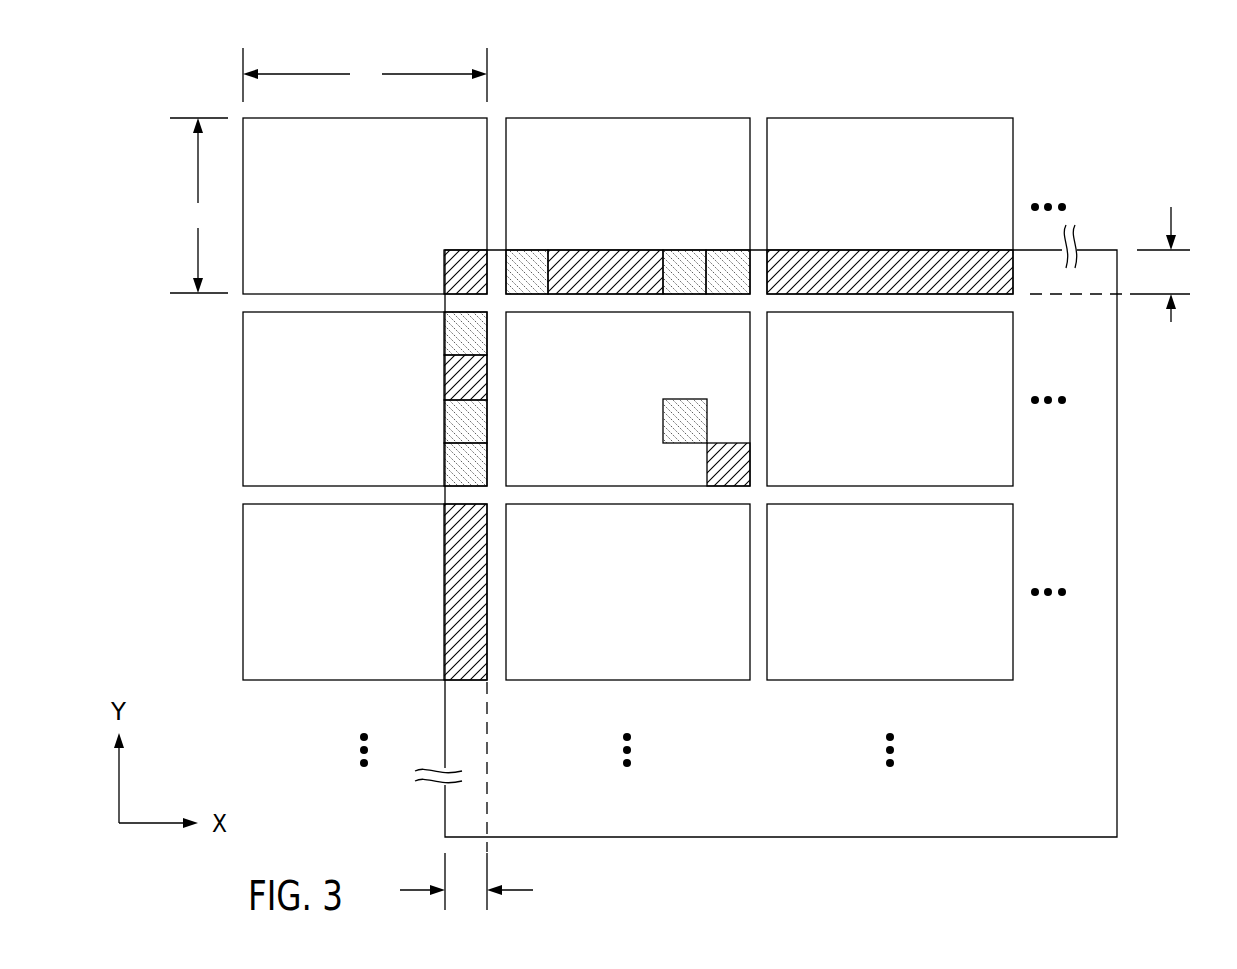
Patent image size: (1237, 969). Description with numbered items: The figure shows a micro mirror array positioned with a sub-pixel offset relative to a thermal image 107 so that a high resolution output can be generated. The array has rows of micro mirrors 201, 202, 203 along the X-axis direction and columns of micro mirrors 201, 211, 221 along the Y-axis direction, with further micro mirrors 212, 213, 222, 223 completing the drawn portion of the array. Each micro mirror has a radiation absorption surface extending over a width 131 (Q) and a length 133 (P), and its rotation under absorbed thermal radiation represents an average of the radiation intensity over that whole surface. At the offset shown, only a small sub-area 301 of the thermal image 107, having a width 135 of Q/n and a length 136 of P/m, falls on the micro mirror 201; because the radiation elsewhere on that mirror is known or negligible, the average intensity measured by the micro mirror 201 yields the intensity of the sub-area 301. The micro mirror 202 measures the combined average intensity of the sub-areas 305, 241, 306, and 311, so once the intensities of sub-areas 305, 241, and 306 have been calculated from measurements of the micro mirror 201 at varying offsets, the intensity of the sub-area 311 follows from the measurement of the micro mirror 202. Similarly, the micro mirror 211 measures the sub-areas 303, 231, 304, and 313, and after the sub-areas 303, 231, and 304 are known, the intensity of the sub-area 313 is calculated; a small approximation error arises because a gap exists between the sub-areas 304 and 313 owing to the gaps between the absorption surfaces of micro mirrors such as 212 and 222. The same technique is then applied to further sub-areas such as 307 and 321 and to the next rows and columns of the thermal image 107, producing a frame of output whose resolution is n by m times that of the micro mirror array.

The thermal image 107 is at (1035, 819).
The width 131 is at (313, 74).
The length 133 is at (198, 168).
The width of sub-area 135 is at (470, 890).
The length of sub-area 136 is at (1171, 262).
The micro mirror 201 is at (400, 234).
The micro mirror 202 is at (663, 234).
The micro mirror 203 is at (925, 234).
The micro mirror 211 is at (400, 428).
The micro mirror 212 is at (663, 428).
The micro mirror 213 is at (925, 428).
The micro mirror 221 is at (400, 619).
The micro mirror 222 is at (663, 619).
The micro mirror 223 is at (925, 619).
The sub-area 231 is at (487, 384).
The sub-area 241 is at (577, 250).
The sub-area 301 is at (444, 262).
The sub-area 303 is at (444, 328).
The sub-area 304 is at (487, 427).
The sub-area 305 is at (535, 295).
The sub-area 306 is at (685, 295).
The sub-area 307 is at (675, 445).
The sub-area 311 is at (731, 250).
The sub-area 313 is at (444, 462).
The sub-area 321 is at (750, 463).